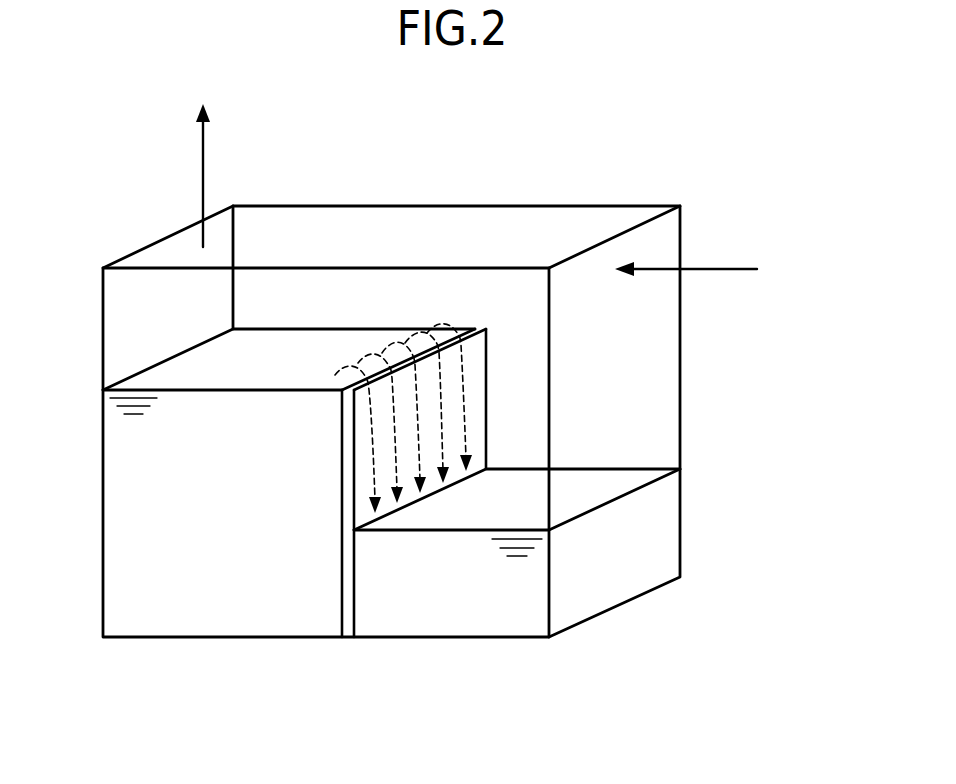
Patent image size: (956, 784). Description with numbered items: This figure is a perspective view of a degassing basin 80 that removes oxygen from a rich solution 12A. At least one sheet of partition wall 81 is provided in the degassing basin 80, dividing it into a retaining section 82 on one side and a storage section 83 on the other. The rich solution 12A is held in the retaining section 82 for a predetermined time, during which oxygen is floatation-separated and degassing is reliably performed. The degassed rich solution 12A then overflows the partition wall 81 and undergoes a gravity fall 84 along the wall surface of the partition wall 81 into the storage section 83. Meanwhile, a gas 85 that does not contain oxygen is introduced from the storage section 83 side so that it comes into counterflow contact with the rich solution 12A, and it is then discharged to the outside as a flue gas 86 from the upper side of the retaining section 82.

The degassing basin 80 is at (440, 186).
The partition wall 81 is at (347, 557).
The retaining section 82 is at (158, 625).
The storage section 83 is at (459, 623).
The gravity fall 84 is at (487, 355).
The gas 85 is at (730, 269).
The flue gas 86 is at (204, 147).
The rich solution 12A is at (597, 498).